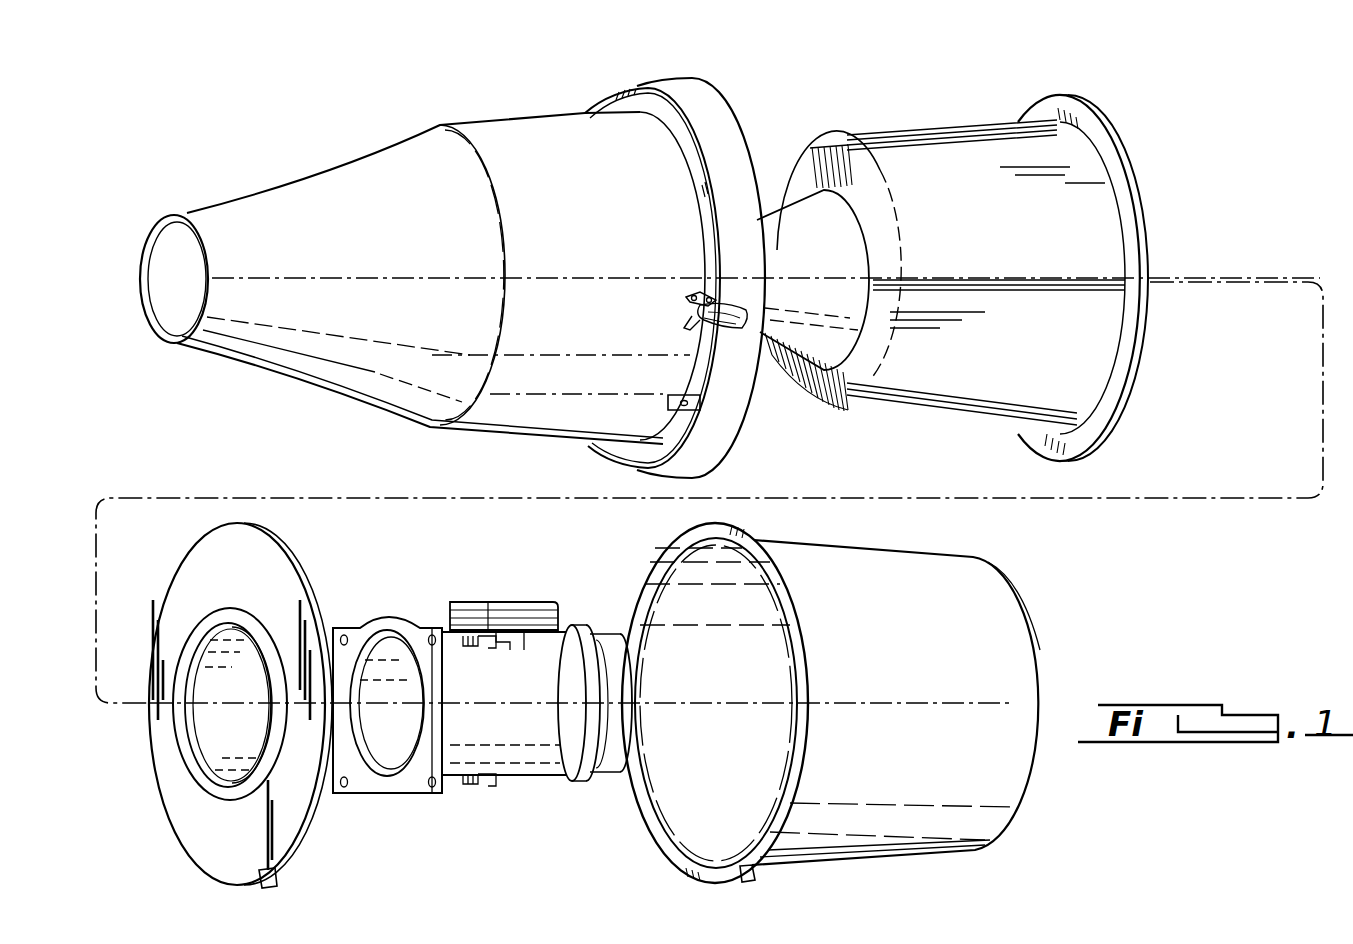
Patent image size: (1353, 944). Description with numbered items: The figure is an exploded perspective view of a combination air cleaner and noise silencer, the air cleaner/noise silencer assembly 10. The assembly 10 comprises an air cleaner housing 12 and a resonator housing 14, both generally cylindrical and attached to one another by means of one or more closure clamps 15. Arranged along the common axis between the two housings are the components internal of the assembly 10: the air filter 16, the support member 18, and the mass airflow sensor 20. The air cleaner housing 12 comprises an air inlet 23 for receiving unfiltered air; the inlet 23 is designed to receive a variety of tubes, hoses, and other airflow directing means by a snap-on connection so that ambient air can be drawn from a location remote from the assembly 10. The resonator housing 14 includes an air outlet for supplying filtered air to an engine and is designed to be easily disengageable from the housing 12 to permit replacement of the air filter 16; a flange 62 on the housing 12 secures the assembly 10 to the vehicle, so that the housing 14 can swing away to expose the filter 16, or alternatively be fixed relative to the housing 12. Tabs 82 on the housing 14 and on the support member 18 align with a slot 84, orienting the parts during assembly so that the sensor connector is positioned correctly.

The air cleaner/noise silencer assembly 10 is at (985, 80).
The air cleaner housing 12 is at (304, 204).
The resonator housing 14 is at (1016, 793).
The closure clamp 15 is at (690, 297).
The air filter 16 is at (888, 411).
The support member 18 is at (290, 838).
The mass airflow sensor 20 is at (520, 780).
The air inlet 23 is at (146, 329).
The flange 62 is at (700, 405).
The tab 82 is at (280, 884).
The slot 84 is at (700, 447).